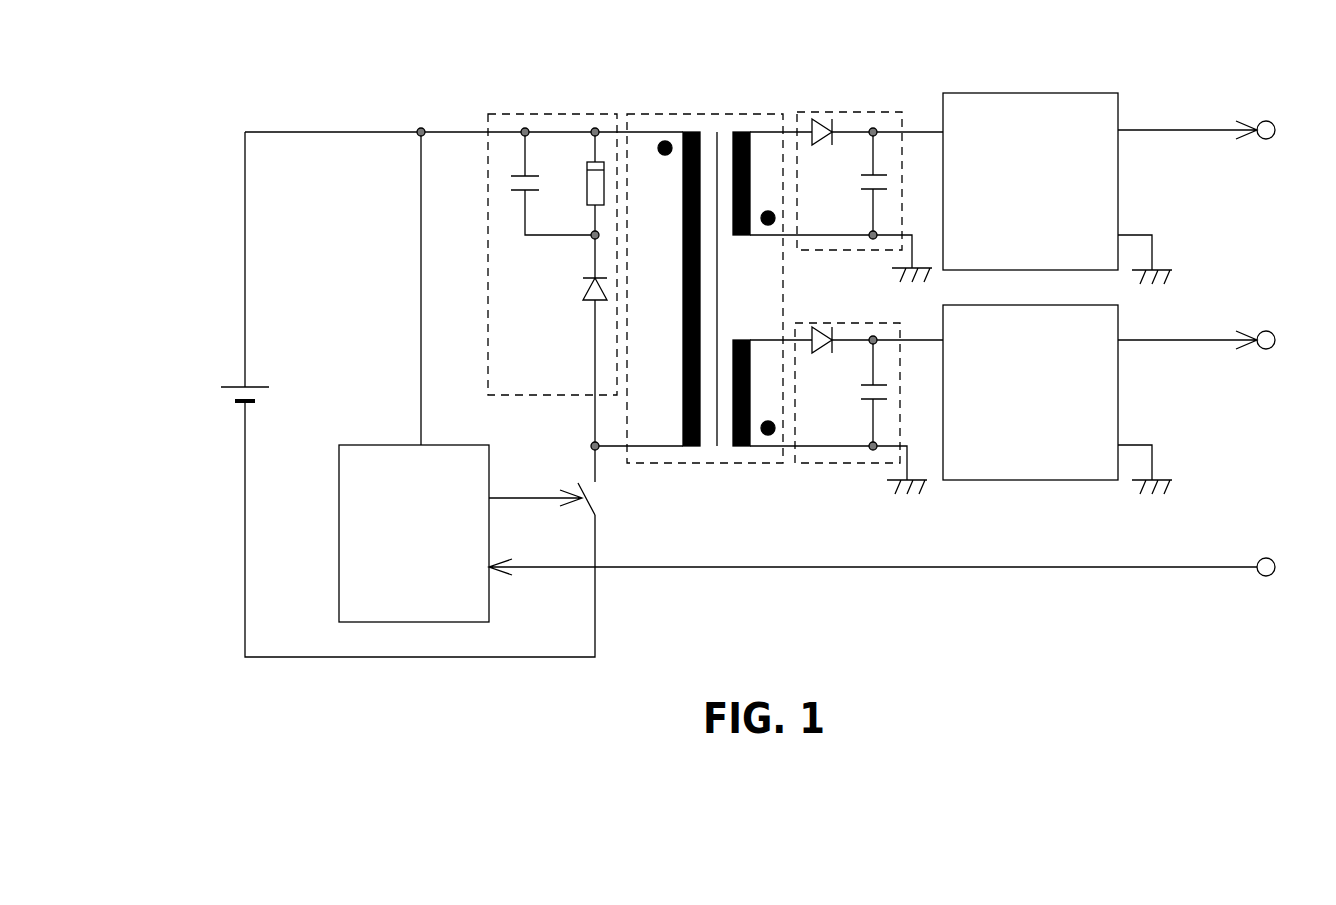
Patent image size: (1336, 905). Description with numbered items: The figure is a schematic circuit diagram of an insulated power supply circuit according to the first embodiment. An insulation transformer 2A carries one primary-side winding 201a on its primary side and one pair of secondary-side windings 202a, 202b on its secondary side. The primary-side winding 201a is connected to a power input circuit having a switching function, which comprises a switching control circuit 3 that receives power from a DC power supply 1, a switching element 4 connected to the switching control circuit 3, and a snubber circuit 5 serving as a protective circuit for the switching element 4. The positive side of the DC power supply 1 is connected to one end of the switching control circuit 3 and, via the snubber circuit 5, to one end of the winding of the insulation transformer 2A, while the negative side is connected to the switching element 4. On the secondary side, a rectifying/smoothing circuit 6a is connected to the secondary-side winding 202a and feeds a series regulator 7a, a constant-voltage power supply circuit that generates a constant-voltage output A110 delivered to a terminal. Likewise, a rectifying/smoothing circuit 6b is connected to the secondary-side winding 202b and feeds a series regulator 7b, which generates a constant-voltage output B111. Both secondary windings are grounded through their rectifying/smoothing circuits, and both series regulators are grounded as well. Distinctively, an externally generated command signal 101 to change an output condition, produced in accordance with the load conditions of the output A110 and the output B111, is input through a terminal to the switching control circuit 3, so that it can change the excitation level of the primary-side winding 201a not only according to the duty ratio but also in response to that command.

The DC power supply 1 is at (245, 370).
The switching control circuit 3 is at (378, 445).
The switching element 4 is at (578, 483).
The snubber circuit 5 is at (557, 113).
The insulation transformer 2A is at (710, 289).
The primary-side winding 201a is at (695, 447).
The secondary-side winding 202a is at (742, 132).
The secondary-side winding 202b is at (745, 447).
The rectifying/smoothing circuit 6a is at (838, 112).
The rectifying/smoothing circuit 6b is at (836, 465).
The series regulator 7a is at (995, 93).
The series regulator 7b is at (1037, 481).
The output A A110 is at (1213, 128).
The output B B111 is at (1213, 338).
The command signal 101 is at (1213, 566).